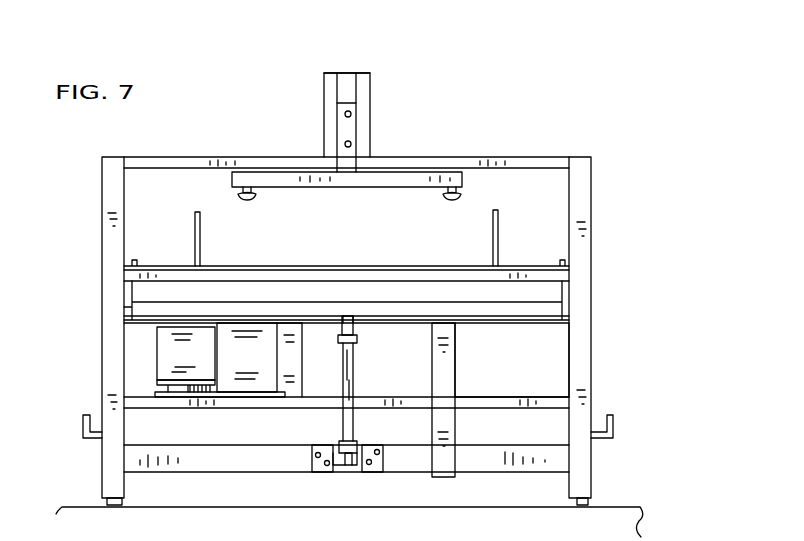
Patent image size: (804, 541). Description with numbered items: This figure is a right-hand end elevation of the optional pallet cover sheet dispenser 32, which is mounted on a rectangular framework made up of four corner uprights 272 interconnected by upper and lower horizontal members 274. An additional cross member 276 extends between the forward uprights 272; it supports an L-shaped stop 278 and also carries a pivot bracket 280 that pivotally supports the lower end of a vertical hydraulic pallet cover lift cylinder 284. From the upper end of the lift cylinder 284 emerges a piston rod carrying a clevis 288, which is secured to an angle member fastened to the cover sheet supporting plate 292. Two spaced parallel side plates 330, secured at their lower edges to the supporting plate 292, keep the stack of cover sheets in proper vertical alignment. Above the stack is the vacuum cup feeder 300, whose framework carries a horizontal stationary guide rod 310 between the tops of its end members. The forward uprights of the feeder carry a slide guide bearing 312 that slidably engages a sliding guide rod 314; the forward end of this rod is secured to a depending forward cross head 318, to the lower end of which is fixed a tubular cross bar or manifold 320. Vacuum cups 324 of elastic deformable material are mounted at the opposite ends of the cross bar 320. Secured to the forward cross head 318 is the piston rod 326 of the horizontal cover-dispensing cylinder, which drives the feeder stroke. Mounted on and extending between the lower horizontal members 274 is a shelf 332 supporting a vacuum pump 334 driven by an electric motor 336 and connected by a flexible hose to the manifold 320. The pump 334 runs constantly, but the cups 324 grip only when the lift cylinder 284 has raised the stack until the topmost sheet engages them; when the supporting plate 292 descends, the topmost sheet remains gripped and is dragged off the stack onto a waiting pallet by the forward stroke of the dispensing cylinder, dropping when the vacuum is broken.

The pallet cover sheet dispenser 32 is at (100, 160).
The corner uprights 272 is at (102, 358).
The upper and lower horizontal members 274 is at (171, 168).
The cross member 276 is at (222, 463).
The L-shaped stop 278 is at (455, 371).
The pivot bracket 280 is at (353, 462).
The vertical hydraulic pallet cover lift cylinder 284 is at (353, 373).
The clevis 288 is at (354, 326).
The cover sheet supporting plate 292 is at (481, 324).
The vacuum cup feeder 300 is at (372, 91).
The horizontal stationary guide rod 310 is at (342, 82).
The slide guide bearing 312 is at (346, 103).
The sliding guide rod 314 is at (345, 115).
The forward cross head 318 is at (356, 126).
The tubular cross bar or manifold 320 is at (352, 188).
The vacuum cups 324 is at (252, 197).
The piston rod 326 is at (345, 144).
The side plates 330 is at (195, 240).
The shelf 332 is at (284, 405).
The vacuum pump 334 is at (259, 357).
The electric motor 336 is at (186, 359).